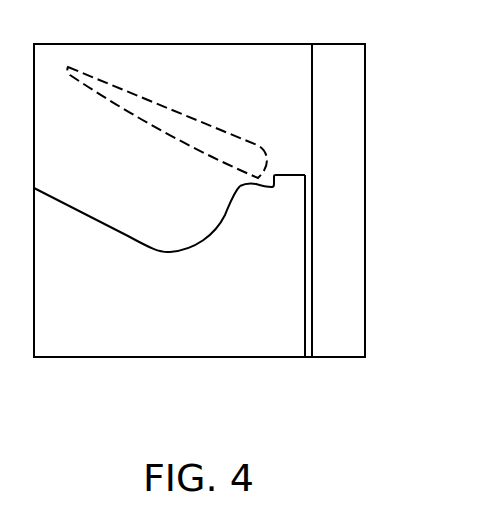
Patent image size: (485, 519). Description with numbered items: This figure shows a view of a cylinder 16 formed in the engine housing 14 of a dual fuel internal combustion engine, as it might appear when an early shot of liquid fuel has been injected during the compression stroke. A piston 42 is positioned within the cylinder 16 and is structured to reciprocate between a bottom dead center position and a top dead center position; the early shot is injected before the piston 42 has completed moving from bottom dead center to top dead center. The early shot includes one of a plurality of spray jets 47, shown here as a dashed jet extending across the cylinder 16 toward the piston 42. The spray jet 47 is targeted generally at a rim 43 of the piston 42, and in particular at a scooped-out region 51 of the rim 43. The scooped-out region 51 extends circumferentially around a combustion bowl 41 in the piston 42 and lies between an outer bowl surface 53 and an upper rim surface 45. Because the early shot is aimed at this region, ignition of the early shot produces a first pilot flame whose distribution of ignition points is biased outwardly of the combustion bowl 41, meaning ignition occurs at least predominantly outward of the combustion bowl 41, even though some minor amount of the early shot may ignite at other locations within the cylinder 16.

The engine housing 14 is at (346, 78).
The cylinder 16 is at (157, 73).
The combustion bowl 41 is at (106, 200).
The piston 42 is at (297, 210).
The rim 43 is at (293, 166).
The upper rim surface 45 is at (306, 174).
The spray jet 47 is at (196, 113).
The scooped-out region 51 is at (247, 186).
The outer bowl surface 53 is at (220, 213).